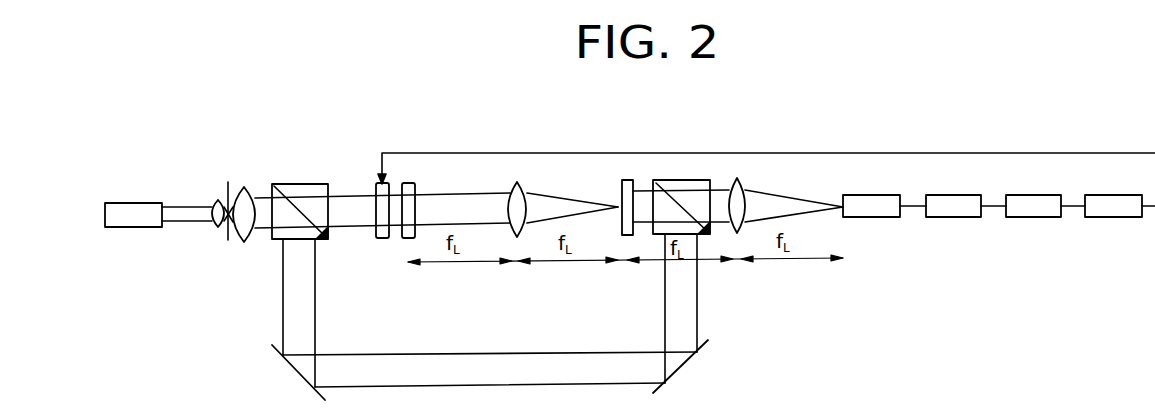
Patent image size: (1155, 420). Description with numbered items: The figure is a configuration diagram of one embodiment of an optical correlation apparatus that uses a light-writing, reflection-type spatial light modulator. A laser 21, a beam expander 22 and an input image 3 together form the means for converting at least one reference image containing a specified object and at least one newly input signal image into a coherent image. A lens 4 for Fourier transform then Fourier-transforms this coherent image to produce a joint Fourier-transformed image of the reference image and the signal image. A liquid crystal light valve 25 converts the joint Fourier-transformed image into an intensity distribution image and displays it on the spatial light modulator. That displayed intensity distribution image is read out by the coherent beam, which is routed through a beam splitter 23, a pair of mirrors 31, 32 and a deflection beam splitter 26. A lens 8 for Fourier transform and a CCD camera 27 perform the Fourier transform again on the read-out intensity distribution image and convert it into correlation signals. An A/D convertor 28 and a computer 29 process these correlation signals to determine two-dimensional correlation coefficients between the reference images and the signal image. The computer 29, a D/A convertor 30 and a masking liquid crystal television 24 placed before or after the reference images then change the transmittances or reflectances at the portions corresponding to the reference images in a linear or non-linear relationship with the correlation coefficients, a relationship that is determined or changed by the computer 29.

The laser 21 is at (126, 203).
The beam expander 22 is at (226, 182).
The beam splitter 23 is at (296, 184).
The masking liquid crystal television 24 is at (378, 183).
The input image 3 is at (408, 183).
The lens for Fourier transform 4 is at (519, 182).
The liquid crystal light valve 25 is at (626, 180).
The deflection beam splitter 26 is at (690, 180).
The lens for Fourier transform 8 is at (739, 178).
The CCD camera 27 is at (860, 195).
The A/D convertor 28 is at (956, 195).
The computer 29 is at (1037, 195).
The D/A convertor 30 is at (1118, 200).
The mirror 31 is at (300, 378).
The mirror 32 is at (688, 362).